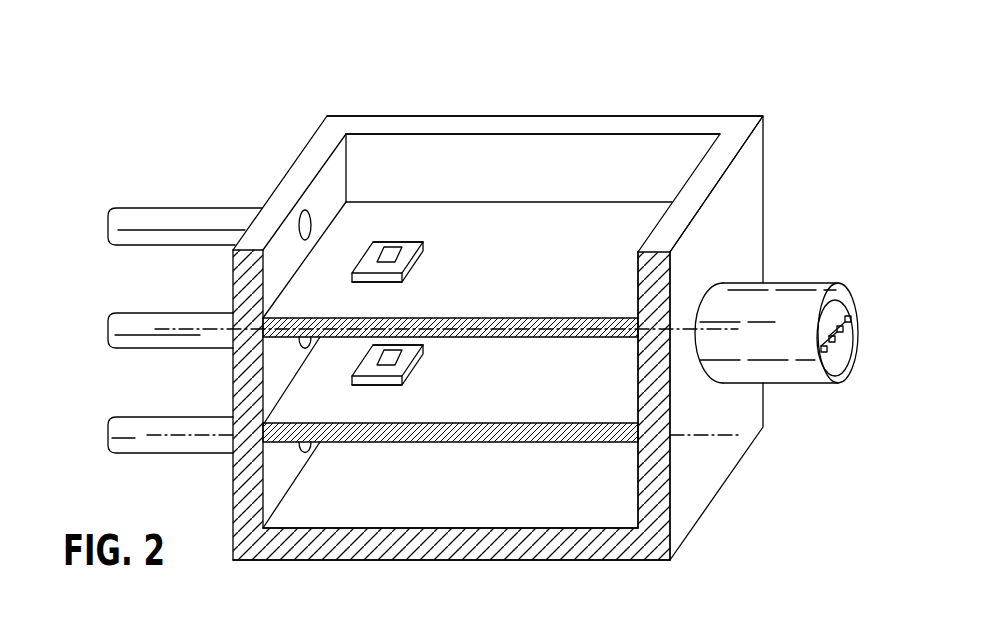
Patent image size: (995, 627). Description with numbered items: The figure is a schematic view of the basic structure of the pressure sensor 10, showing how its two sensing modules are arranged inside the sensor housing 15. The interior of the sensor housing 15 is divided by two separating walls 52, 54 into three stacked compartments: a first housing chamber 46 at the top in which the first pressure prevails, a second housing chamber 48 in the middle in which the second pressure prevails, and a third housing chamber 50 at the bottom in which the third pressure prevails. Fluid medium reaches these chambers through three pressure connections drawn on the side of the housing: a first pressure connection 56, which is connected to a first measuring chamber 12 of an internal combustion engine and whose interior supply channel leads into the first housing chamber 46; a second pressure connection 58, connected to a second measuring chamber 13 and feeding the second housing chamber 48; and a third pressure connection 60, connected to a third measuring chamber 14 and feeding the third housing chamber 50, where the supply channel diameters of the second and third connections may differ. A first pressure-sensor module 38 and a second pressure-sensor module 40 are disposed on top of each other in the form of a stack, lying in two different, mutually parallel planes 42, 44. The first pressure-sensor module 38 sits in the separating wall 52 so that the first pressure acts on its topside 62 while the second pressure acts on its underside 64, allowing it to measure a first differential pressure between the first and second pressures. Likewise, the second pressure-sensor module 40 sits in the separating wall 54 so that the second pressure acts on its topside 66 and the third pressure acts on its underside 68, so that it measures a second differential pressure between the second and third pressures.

The pressure sensor 10 is at (699, 78).
The first measuring chamber 12 is at (108, 222).
The second measuring chamber 13 is at (108, 326).
The third measuring chamber 14 is at (108, 433).
The sensor housing 15 is at (740, 227).
The first pressure-sensor module 38 is at (430, 260).
The second pressure-sensor module 40 is at (417, 383).
The first plane 42 is at (733, 330).
The second plane 44 is at (698, 434).
The first housing chamber 46 is at (653, 175).
The second housing chamber 48 is at (602, 380).
The third housing chamber 50 is at (597, 485).
The separating wall 52 is at (383, 218).
The separating wall 54 is at (400, 442).
The first pressure connection 56 is at (155, 218).
The second pressure connection 58 is at (151, 322).
The third pressure connection 60 is at (148, 427).
The topside 62 is at (415, 240).
The underside 64 is at (383, 283).
The topside 66 is at (415, 346).
The underside 68 is at (370, 386).